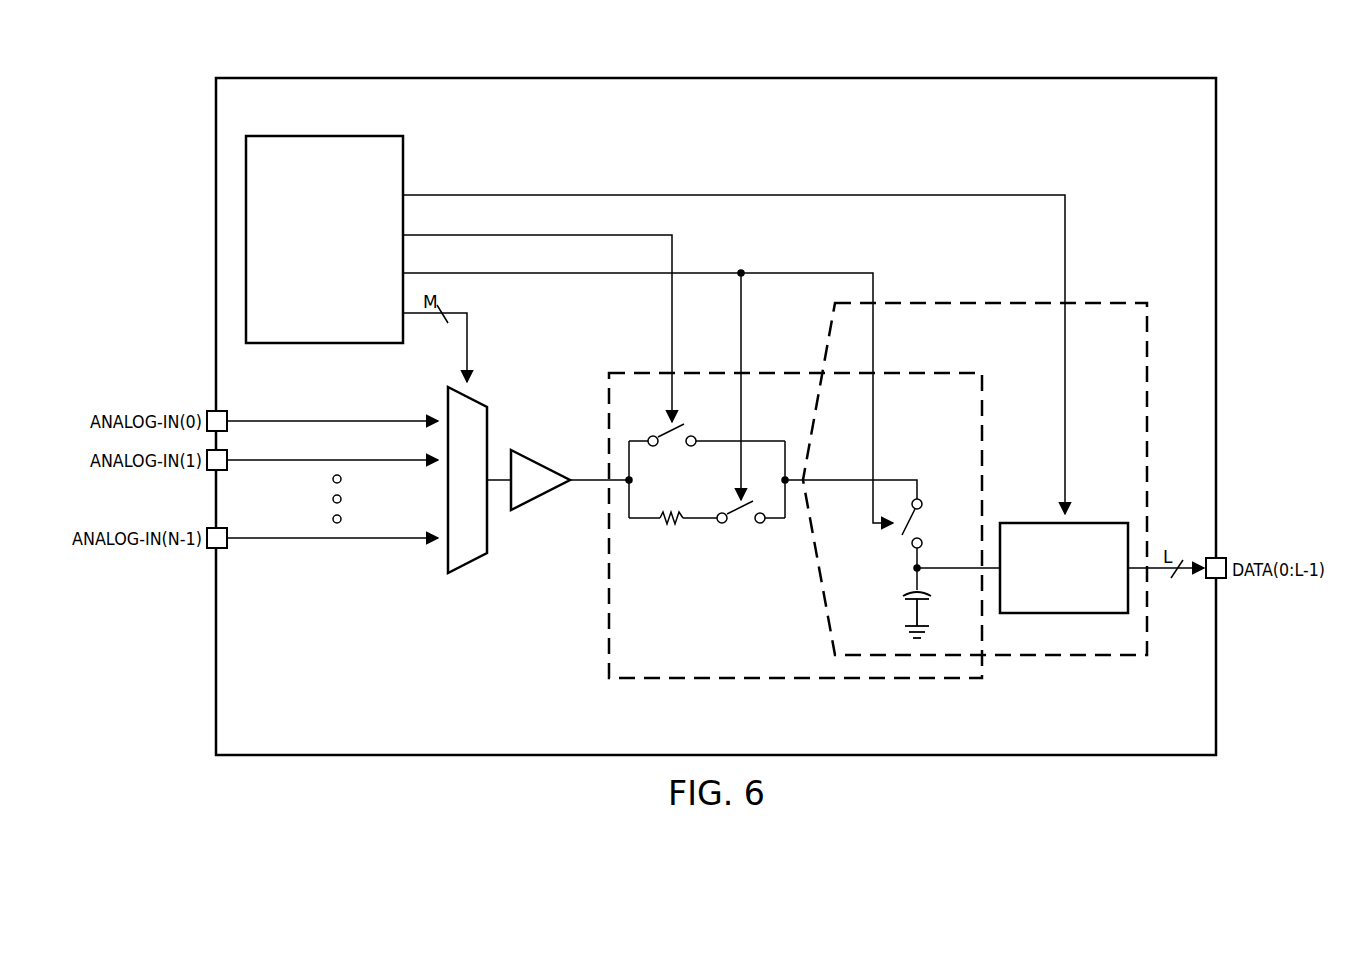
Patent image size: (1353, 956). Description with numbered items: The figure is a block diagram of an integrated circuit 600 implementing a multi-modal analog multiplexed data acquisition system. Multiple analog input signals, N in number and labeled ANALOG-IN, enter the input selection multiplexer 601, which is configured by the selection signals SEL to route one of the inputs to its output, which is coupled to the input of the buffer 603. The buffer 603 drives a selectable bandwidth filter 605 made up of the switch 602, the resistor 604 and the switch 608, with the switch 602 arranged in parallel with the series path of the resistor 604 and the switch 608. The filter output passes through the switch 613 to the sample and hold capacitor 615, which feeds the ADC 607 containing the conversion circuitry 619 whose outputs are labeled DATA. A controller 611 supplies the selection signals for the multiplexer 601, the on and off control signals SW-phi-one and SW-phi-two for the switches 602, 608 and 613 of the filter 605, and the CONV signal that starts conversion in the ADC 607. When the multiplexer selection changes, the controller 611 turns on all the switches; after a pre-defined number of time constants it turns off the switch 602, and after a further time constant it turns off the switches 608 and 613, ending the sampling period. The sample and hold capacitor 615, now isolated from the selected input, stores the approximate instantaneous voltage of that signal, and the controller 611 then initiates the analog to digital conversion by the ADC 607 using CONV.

The integrated circuit 600 is at (735, 130).
The input selection multiplexer 601 is at (473, 560).
The switch 602 is at (672, 432).
The buffer 603 is at (543, 466).
The resistor 604 is at (670, 520).
The selectable bandwidth filter 605 is at (806, 688).
The ADC 607 is at (1038, 665).
The switch 608 is at (741, 510).
The controller 611 is at (324, 136).
The switch 613 is at (910, 515).
The sample and hold capacitor Cs-h 615 is at (905, 597).
The conversion circuitry 619 is at (1093, 522).